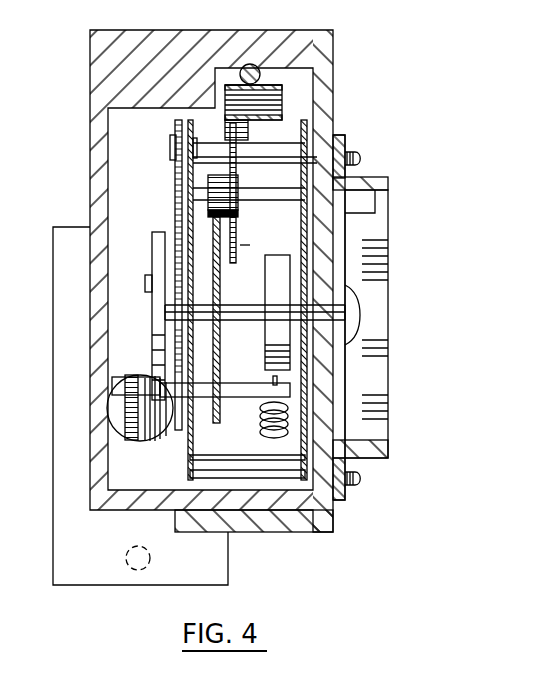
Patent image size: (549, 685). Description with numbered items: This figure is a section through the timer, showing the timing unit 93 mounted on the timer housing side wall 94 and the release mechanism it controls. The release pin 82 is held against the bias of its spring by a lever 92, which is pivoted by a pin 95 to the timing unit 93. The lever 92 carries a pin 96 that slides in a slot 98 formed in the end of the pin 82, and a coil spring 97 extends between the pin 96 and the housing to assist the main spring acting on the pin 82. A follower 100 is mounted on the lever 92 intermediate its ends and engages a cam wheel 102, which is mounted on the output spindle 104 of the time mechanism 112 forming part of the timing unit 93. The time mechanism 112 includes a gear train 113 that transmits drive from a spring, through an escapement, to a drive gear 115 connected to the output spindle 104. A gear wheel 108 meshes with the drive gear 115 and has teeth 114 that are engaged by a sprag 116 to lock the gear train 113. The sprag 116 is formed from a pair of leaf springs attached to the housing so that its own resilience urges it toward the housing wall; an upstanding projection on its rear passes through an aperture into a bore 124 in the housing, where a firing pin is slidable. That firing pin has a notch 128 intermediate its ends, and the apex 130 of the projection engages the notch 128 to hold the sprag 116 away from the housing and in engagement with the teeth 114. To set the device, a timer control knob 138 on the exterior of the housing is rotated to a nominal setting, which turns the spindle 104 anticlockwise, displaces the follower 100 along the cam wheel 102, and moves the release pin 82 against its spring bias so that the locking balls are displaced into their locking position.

The pin 82 is at (152, 440).
The lever 92 is at (176, 208).
The timing unit 93 is at (403, 508).
The timer housing side wall 94 is at (333, 73).
The pin 95 is at (185, 142).
The pin 96 is at (128, 385).
The coil spring 97 is at (262, 432).
The slot 98 is at (110, 418).
The follower 100 is at (148, 286).
The cam wheel 102 is at (158, 257).
The output spindle 104 is at (238, 311).
The gear wheel 108 is at (240, 184).
The time mechanism 112 is at (279, 490).
The gear train 113 is at (248, 245).
The teeth 114 is at (232, 214).
The drive gear 115 is at (218, 348).
The sprag 116 is at (250, 136).
The bore 124 is at (262, 64).
The notch 128 is at (244, 64).
The apex 130 is at (283, 103).
The timer control knob 138 is at (388, 300).